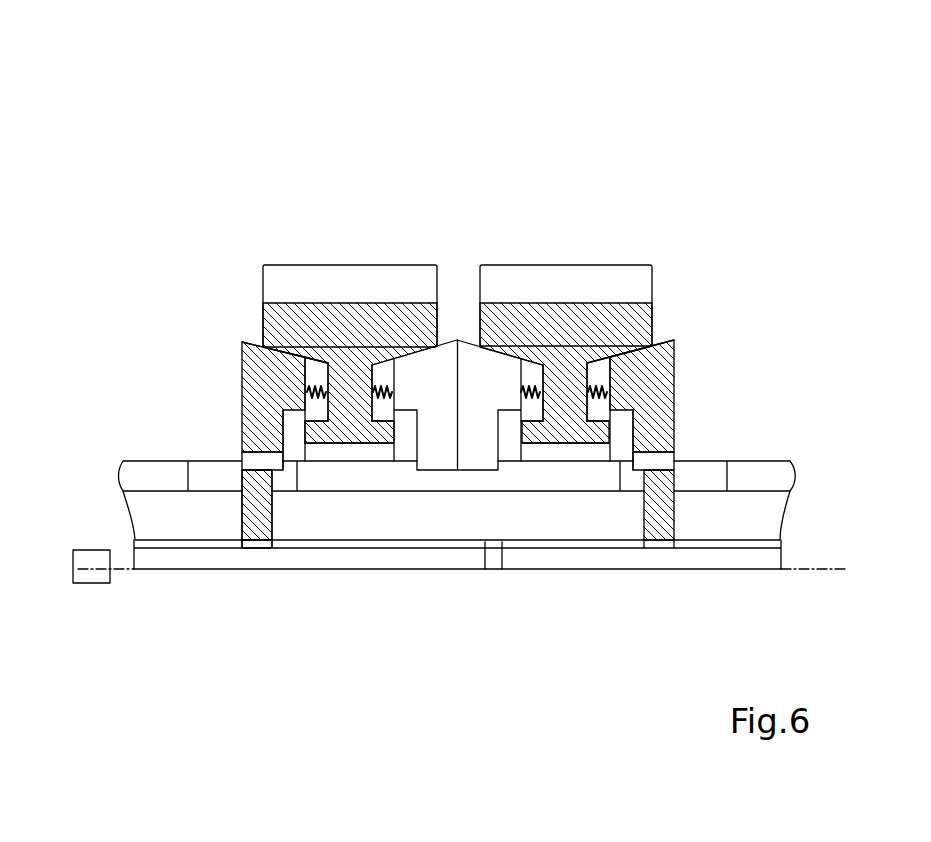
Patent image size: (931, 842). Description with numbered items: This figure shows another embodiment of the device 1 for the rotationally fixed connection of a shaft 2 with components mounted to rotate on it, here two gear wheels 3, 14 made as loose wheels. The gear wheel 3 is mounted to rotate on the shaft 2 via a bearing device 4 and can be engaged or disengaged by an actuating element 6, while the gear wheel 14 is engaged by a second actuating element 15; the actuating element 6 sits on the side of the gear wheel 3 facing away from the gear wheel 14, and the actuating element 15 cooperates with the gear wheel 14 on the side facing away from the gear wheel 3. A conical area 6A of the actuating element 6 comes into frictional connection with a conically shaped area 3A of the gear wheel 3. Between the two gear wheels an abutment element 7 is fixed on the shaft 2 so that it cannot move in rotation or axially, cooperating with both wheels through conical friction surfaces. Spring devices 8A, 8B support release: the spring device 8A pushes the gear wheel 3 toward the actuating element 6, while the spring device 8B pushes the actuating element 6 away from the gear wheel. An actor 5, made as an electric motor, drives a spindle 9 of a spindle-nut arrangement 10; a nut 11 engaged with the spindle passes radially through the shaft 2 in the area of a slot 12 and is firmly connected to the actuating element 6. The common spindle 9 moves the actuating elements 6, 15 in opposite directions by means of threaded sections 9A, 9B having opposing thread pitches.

The device 1 is at (330, 106).
The shaft 2 is at (153, 472).
The component 3 is at (404, 290).
The area 3A is at (302, 350).
The bearing device 4 is at (348, 452).
The actor 5 is at (95, 550).
The actuating element 6 is at (268, 375).
The area 6A is at (255, 345).
The abutment element 7 is at (442, 447).
The spring device 8A is at (307, 397).
The spring device 8B is at (385, 397).
The spindle 9 is at (158, 578).
The threaded section 9A is at (473, 545).
The threaded section 9B is at (590, 542).
The spindle-nut arrangement 10 is at (253, 562).
The nut 11 is at (253, 500).
The slot 12 is at (222, 470).
The gear wheel 14 is at (570, 283).
The actuating element 15 is at (653, 367).